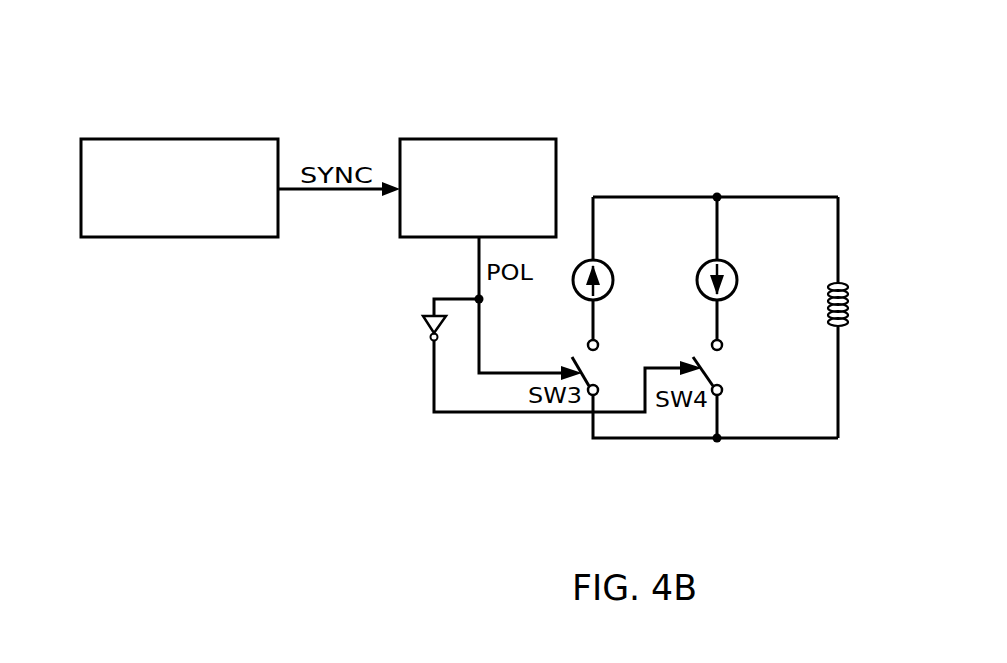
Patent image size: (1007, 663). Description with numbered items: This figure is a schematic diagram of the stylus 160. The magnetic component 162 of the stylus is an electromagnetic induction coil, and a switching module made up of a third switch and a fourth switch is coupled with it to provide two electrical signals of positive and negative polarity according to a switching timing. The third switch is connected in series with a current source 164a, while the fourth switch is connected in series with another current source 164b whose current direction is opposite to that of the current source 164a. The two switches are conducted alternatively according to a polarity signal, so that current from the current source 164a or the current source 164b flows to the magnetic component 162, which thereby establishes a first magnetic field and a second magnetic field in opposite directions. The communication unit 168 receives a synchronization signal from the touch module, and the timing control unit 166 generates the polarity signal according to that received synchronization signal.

The stylus 160 is at (774, 100).
The magnetic component 162 is at (849, 306).
The current source 164a is at (613, 275).
The current source 164b is at (737, 276).
The timing control unit 166 is at (486, 139).
The communication unit 168 is at (207, 139).